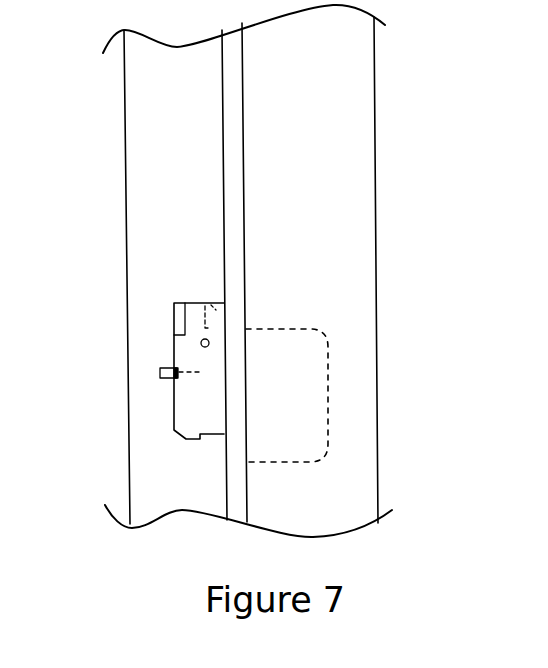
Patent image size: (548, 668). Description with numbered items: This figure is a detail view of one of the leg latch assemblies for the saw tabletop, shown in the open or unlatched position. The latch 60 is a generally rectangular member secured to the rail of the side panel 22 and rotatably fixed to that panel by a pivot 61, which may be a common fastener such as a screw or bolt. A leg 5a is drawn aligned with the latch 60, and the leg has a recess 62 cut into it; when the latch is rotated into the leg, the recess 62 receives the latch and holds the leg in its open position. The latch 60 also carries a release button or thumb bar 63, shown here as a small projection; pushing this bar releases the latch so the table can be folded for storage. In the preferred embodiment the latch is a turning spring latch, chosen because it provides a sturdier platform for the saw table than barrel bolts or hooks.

The side panel 22 is at (133, 165).
The leg 5a is at (363, 178).
The latch 60 is at (173, 348).
The pivot 61 is at (210, 350).
The recess 62 is at (290, 357).
The release button or thumb bar 63 is at (154, 382).